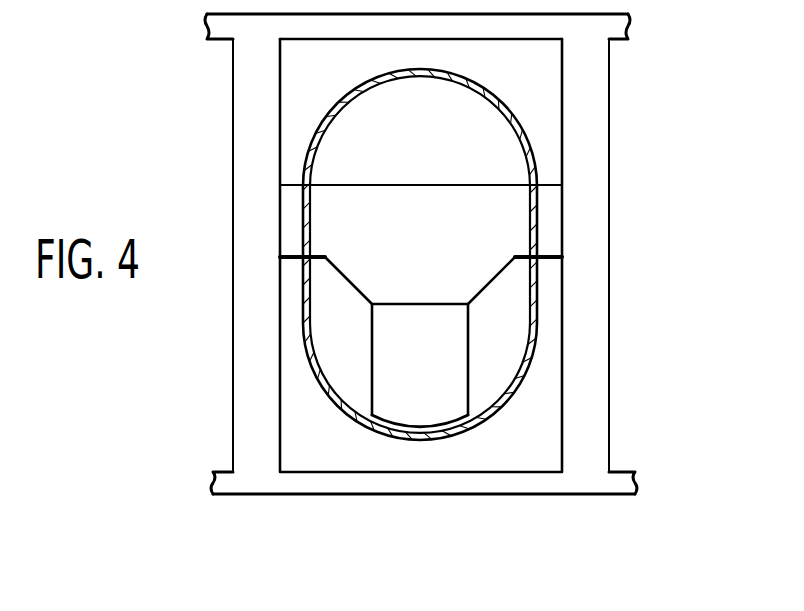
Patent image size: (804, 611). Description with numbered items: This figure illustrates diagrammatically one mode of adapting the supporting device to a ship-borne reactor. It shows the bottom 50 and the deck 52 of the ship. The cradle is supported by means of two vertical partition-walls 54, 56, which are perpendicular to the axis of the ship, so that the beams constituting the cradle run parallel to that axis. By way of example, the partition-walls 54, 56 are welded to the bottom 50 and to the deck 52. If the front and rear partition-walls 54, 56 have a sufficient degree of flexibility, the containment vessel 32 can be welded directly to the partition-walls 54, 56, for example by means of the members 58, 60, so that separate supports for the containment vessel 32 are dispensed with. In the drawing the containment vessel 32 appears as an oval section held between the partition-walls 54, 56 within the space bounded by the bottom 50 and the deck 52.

The containment vessel 32 is at (513, 120).
The bottom 50 is at (434, 254).
The deck 52 is at (510, 28).
The vertical partition-wall 54 is at (590, 307).
The vertical partition-wall 56 is at (250, 317).
The member 58 is at (548, 205).
The member 60 is at (293, 200).